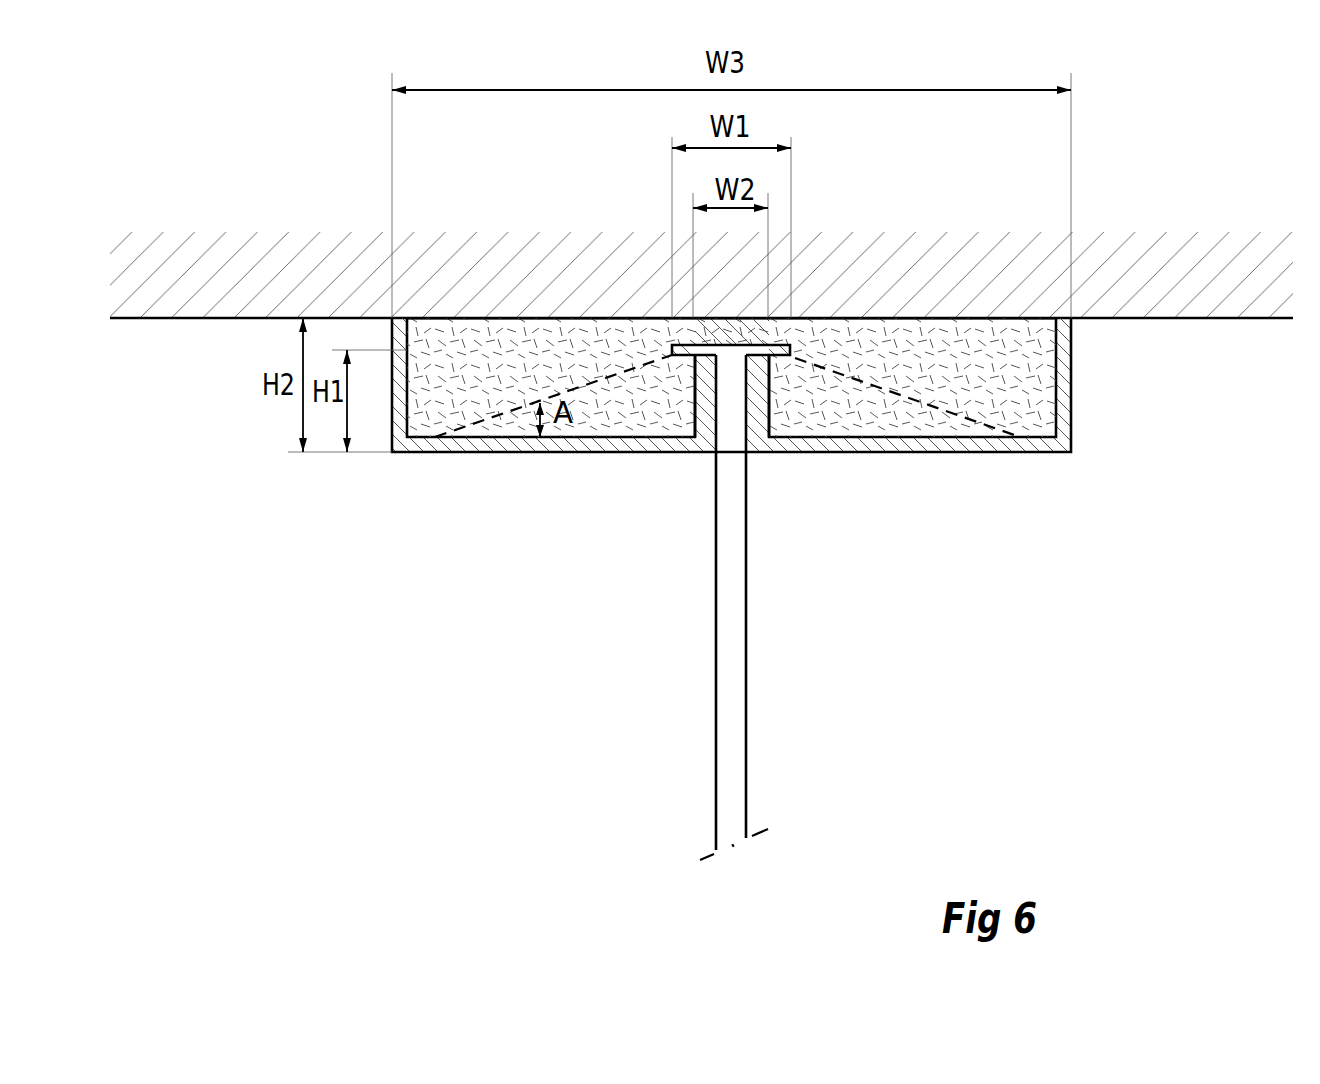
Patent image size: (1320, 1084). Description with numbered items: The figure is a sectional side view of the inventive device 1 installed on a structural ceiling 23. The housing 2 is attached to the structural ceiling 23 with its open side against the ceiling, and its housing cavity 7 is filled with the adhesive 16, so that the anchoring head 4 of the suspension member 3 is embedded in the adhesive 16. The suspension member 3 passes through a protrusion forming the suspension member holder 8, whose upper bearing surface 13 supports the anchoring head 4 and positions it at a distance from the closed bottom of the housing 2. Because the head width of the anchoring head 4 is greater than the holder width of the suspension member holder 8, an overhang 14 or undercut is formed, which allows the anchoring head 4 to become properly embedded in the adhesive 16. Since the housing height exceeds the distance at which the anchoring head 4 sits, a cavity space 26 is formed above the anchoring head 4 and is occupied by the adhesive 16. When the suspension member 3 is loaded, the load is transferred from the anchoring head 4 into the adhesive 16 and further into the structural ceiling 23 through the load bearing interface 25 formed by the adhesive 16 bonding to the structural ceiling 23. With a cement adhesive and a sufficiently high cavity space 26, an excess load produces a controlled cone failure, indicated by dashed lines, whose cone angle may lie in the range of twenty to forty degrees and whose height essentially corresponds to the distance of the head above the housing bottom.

The device 1 is at (792, 487).
The housing 2 is at (1063, 378).
The suspension member 3 is at (732, 651).
The anchoring head 4 is at (770, 355).
The housing cavity 7 is at (466, 388).
The suspension member holder 8 is at (702, 390).
The upper bearing surface 13 is at (756, 345).
The overhang 14 is at (680, 358).
The adhesive 16 is at (960, 365).
The structural ceiling 23 is at (183, 263).
The load bearing interface 25 is at (931, 318).
The cavity space 26 is at (720, 328).